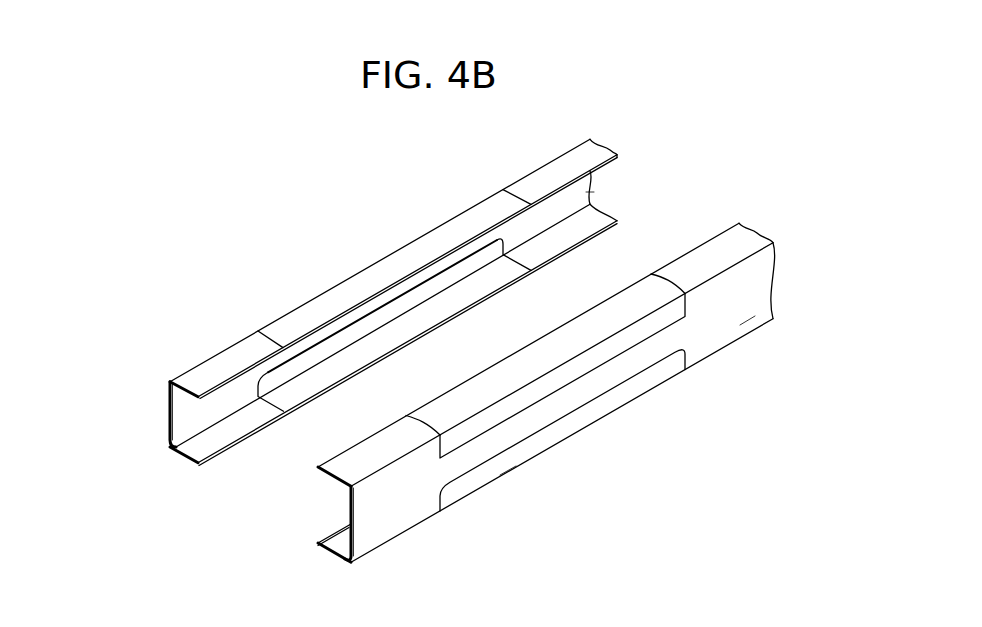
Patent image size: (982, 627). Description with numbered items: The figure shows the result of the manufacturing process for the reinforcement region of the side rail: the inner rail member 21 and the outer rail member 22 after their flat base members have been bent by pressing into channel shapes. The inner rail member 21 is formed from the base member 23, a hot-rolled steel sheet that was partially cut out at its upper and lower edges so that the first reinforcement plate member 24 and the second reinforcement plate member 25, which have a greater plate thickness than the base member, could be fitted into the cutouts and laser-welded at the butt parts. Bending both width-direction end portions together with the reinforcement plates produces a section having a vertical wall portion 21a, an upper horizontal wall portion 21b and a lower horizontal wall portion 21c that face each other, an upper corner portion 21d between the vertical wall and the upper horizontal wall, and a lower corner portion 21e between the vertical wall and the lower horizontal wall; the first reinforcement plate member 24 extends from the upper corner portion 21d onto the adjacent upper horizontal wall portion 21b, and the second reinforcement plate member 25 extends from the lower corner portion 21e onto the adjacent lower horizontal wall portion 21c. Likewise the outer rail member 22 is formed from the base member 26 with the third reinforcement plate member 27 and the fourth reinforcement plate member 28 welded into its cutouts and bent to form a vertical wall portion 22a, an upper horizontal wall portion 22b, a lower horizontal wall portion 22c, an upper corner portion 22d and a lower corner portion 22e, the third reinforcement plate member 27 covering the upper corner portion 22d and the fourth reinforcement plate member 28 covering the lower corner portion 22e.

The inner rail member 21 is at (522, 393).
The vertical wall portion 21a is at (410, 513).
The upper horizontal wall portion 21b is at (642, 292).
The lower horizontal wall portion 21c is at (323, 530).
The upper corner portion 21d is at (540, 380).
The lower corner portion 21e is at (508, 470).
The outer rail member 22 is at (370, 317).
The vertical wall portion 22a is at (178, 415).
The upper horizontal wall portion 22b is at (493, 197).
The lower horizontal wall portion 22c is at (192, 452).
The upper corner portion 22d is at (300, 305).
The lower corner portion 22e is at (307, 378).
The base member 23 is at (772, 340).
The first reinforcement plate member 24 is at (580, 327).
The second reinforcement plate member 25 is at (583, 418).
The base member 26 is at (575, 197).
The third reinforcement plate member 27 is at (372, 275).
The fourth reinforcement plate member 28 is at (388, 343).